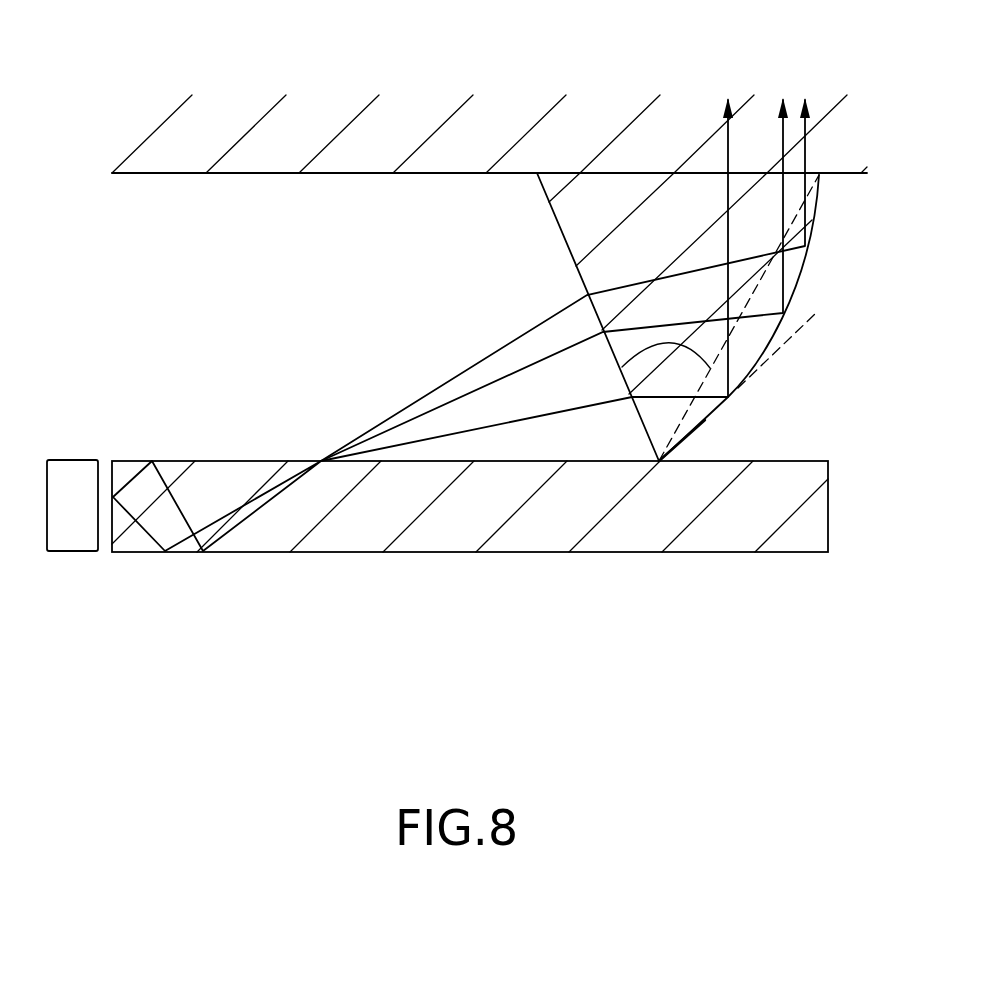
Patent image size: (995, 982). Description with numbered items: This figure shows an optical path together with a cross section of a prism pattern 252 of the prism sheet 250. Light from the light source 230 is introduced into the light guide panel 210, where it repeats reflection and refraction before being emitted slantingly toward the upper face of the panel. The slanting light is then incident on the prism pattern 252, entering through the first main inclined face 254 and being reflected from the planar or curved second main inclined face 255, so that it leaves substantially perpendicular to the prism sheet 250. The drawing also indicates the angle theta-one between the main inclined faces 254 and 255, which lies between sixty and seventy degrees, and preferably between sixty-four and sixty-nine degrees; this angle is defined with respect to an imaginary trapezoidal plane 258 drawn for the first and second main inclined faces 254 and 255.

The prism sheet 250 is at (514, 60).
The prism pattern 252 is at (510, 197).
The first main inclined face 254 is at (572, 250).
The second main inclined face 255 is at (800, 263).
The imaginary trapezoidal plane 258 is at (757, 287).
The light guide panel 210 is at (452, 553).
The light source 230 is at (73, 535).